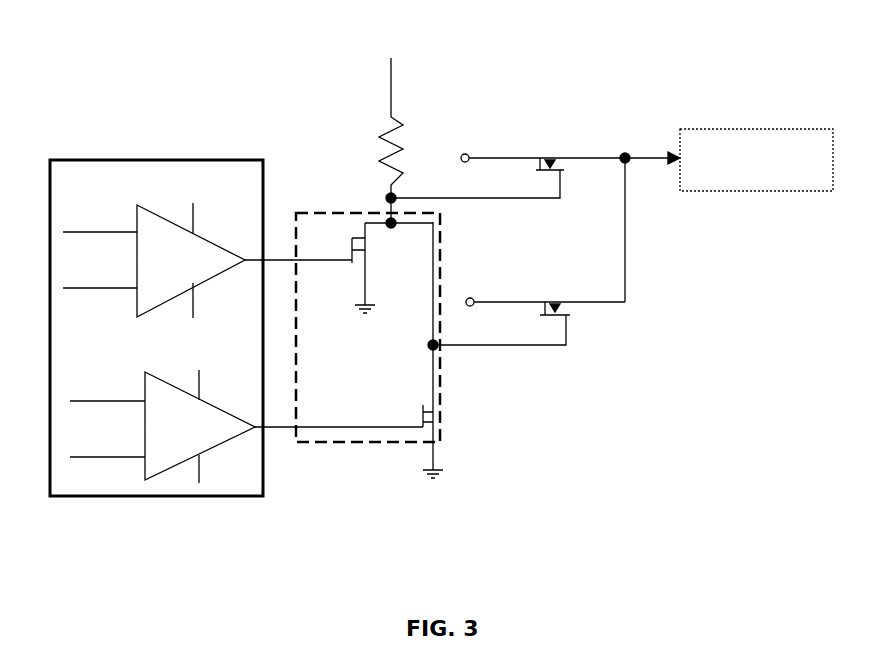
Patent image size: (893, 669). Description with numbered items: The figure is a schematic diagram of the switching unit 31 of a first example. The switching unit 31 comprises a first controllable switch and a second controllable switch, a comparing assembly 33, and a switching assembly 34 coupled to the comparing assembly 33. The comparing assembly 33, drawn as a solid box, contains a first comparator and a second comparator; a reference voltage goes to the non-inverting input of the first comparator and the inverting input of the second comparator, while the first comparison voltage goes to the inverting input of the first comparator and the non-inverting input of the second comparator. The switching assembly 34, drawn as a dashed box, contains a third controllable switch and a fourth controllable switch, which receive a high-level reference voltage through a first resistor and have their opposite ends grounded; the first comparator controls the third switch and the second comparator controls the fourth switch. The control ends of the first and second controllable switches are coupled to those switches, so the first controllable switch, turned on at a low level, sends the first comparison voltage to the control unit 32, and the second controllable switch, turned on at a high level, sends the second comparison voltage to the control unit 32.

The switching unit 31 is at (163, 66).
The control unit 32 is at (731, 160).
The comparing assembly 33 is at (140, 160).
The switching assembly 34 is at (345, 444).